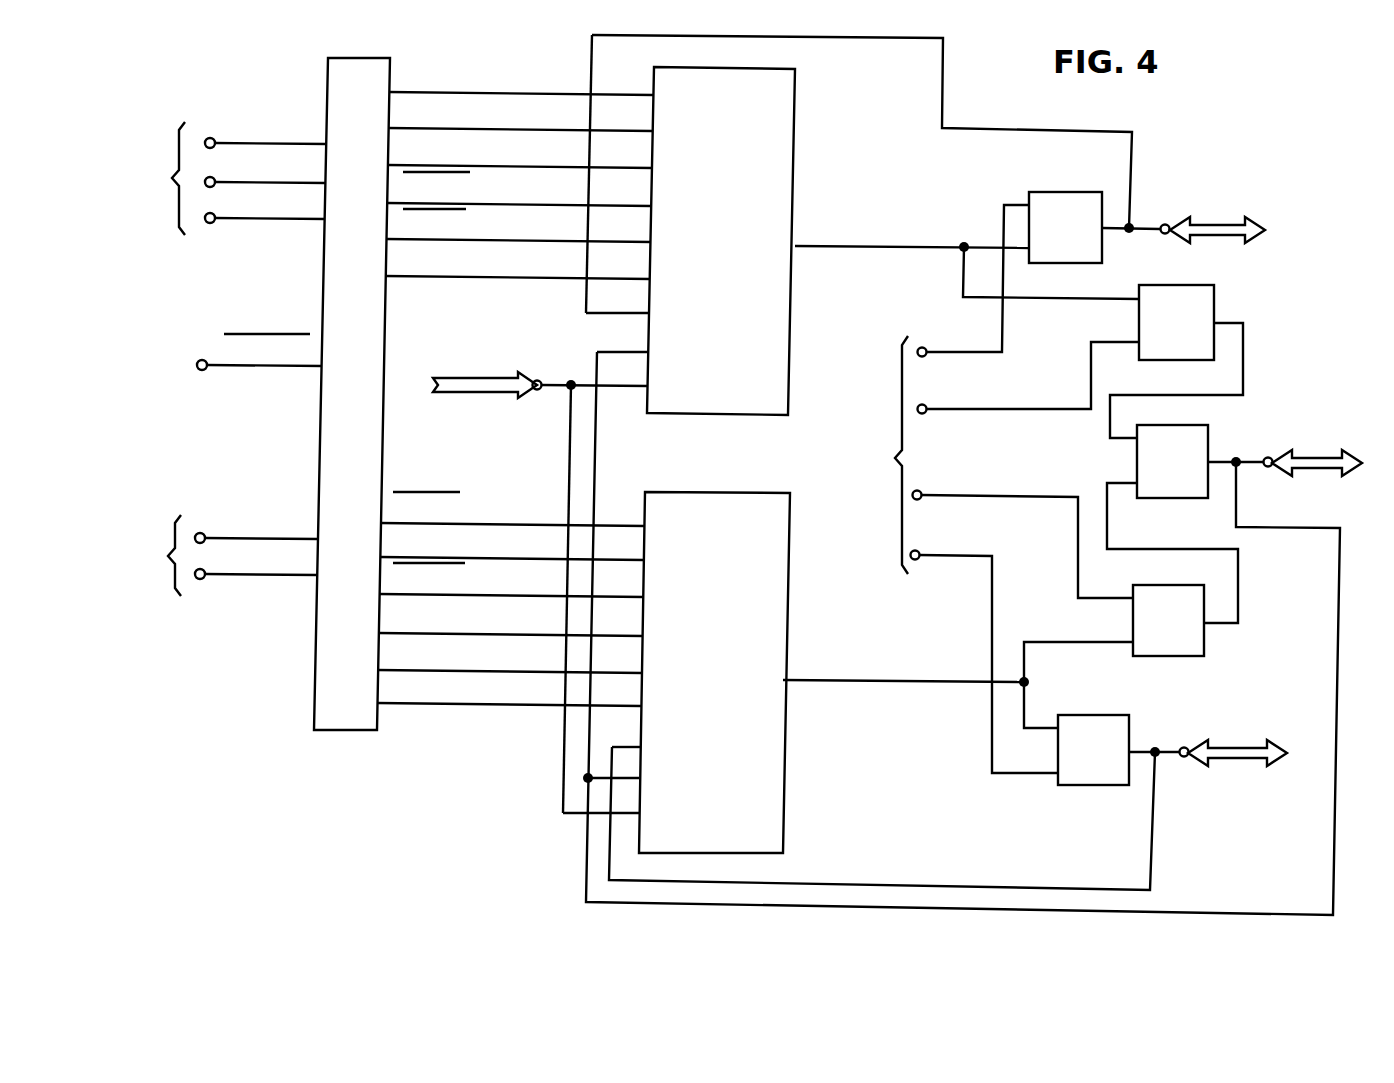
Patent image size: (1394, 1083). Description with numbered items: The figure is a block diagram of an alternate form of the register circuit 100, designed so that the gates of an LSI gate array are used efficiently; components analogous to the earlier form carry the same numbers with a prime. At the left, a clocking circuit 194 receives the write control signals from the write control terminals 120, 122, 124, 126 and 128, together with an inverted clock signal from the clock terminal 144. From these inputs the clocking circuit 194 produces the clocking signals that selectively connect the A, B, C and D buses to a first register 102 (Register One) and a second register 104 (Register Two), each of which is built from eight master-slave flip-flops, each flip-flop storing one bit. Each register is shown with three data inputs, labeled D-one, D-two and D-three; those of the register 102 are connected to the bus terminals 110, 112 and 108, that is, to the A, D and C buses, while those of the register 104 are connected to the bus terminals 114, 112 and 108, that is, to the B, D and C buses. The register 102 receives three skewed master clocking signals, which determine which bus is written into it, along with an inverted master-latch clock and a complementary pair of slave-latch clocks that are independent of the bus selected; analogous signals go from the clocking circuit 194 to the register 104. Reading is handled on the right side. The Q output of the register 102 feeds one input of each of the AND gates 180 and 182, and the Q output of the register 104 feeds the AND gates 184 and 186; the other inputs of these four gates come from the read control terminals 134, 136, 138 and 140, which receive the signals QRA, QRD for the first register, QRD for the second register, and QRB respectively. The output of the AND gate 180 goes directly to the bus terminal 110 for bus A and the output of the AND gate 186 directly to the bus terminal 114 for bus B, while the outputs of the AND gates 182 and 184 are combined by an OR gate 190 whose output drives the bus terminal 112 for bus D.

The register circuit 100 is at (288, 750).
The clocking circuit 194 is at (358, 58).
The register 102 is at (798, 114).
The register 104 is at (786, 817).
The bus terminal 108 is at (541, 390).
The bus terminal 110 is at (1163, 224).
The bus terminal 112 is at (1268, 468).
The bus terminal 114 is at (1185, 757).
The write control terminal 120 is at (210, 138).
The write control terminal 122 is at (210, 177).
The write control terminal 124 is at (210, 223).
The write control terminal 126 is at (200, 533).
The write control terminal 128 is at (200, 579).
The read control terminal 134 is at (922, 347).
The read control terminal 136 is at (922, 413).
The read control terminal 138 is at (920, 499).
The read control terminal 140 is at (916, 560).
The clock terminal 144 is at (197, 366).
The AND gate 180 is at (1038, 192).
The AND gate 182 is at (1215, 296).
The AND gate 184 is at (1205, 642).
The AND gate 186 is at (1088, 787).
The OR gate 190 is at (1203, 500).